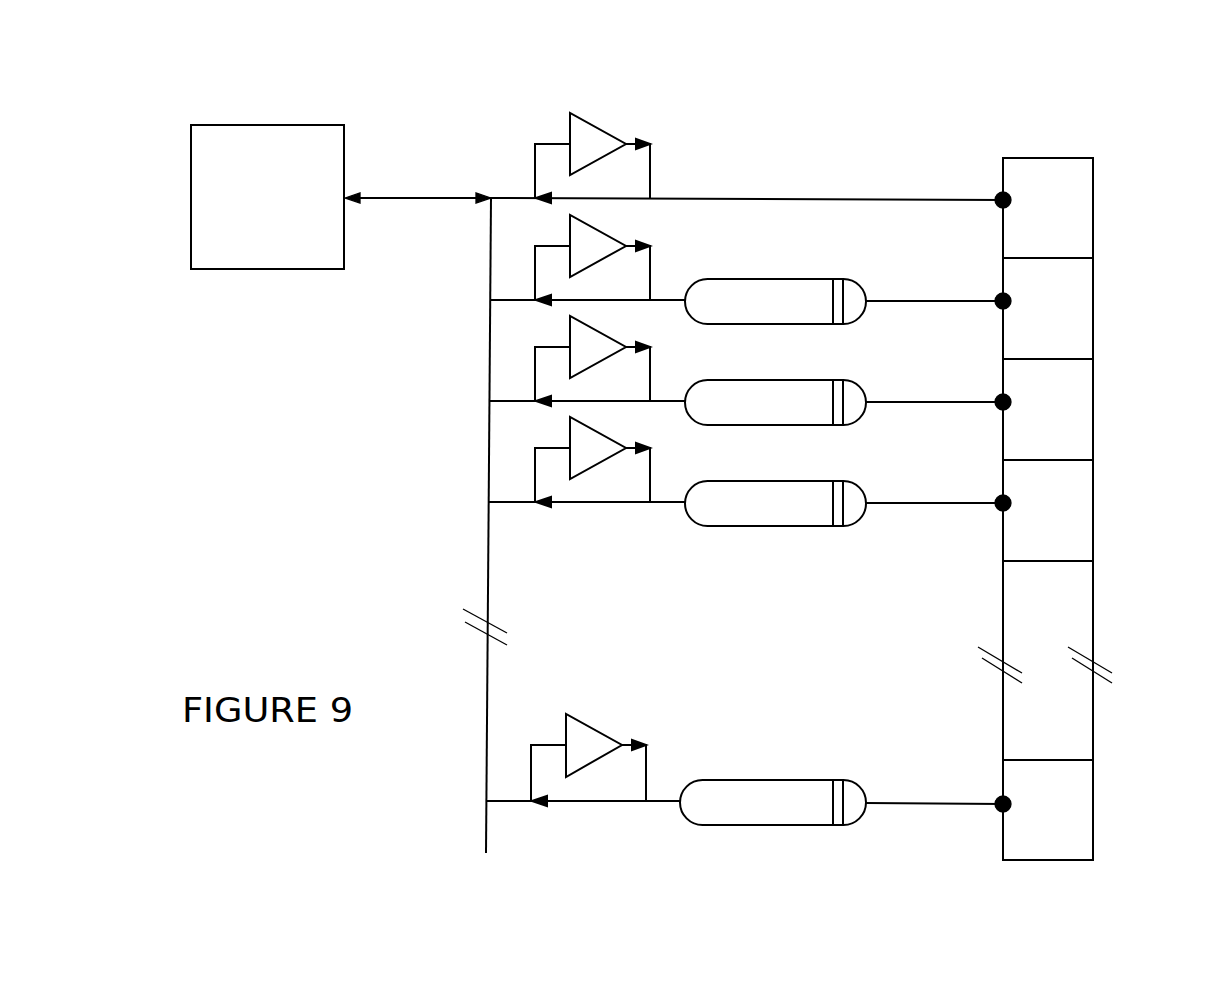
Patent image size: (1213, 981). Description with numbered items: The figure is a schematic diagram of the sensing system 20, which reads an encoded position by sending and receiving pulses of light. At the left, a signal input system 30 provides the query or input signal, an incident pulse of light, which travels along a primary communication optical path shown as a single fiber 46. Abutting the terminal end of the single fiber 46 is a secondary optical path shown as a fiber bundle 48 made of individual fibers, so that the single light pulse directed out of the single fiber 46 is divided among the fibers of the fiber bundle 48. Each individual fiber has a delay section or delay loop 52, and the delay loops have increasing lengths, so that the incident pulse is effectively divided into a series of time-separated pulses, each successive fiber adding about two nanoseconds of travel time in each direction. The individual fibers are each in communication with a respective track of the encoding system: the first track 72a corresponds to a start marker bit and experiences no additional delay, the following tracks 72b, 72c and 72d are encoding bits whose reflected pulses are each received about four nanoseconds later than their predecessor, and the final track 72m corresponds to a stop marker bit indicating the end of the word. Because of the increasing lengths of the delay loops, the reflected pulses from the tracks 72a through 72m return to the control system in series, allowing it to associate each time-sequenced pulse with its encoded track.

The sensing system 20 is at (1083, 449).
The signal input system 30 is at (297, 124).
The single fiber 46 is at (455, 197).
The fiber bundle 48 is at (608, 108).
The delay loop 52 is at (855, 321).
The track 72a is at (1044, 208).
The track 72b is at (1044, 308).
The track 72c is at (1044, 409).
The track 72d is at (1044, 510).
The track 72m is at (1044, 810).